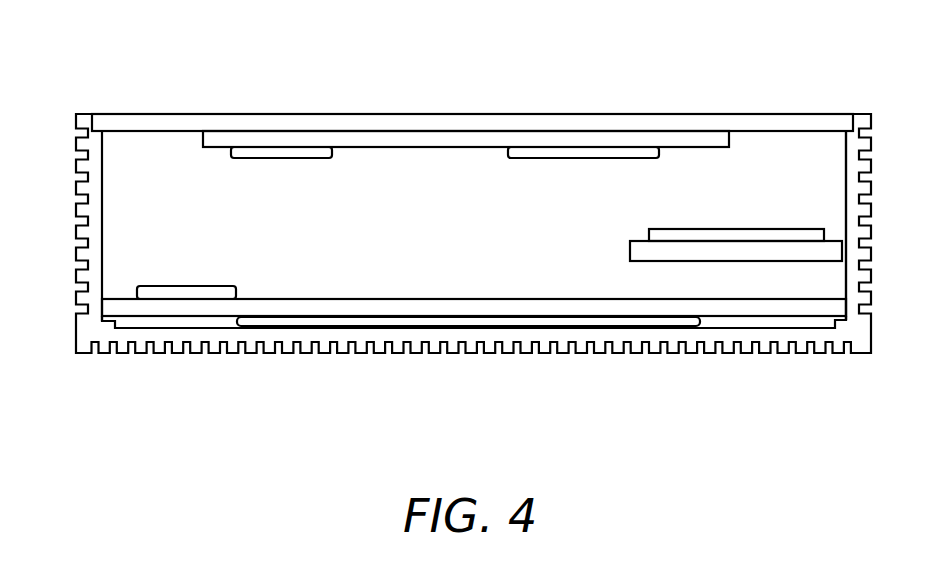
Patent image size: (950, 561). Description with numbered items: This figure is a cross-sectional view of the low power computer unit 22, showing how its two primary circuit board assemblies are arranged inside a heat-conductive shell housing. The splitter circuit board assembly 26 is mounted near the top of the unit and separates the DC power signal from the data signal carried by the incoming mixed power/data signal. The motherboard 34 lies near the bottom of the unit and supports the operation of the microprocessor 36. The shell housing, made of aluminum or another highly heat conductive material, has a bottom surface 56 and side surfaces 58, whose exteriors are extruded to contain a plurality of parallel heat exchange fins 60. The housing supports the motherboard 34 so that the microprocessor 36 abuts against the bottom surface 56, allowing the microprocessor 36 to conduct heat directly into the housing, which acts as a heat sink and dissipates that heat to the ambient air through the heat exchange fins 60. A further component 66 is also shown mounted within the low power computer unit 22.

The top housing plate 22 is at (192, 98).
The upper circuit board 26 is at (678, 143).
The lower circuit board 34 is at (610, 307).
The battery 36 is at (529, 322).
The base plate 56 is at (207, 319).
The side wall 58 is at (858, 238).
The heat sink housing fins 60 is at (77, 185).
The electronic module 66 is at (643, 252).